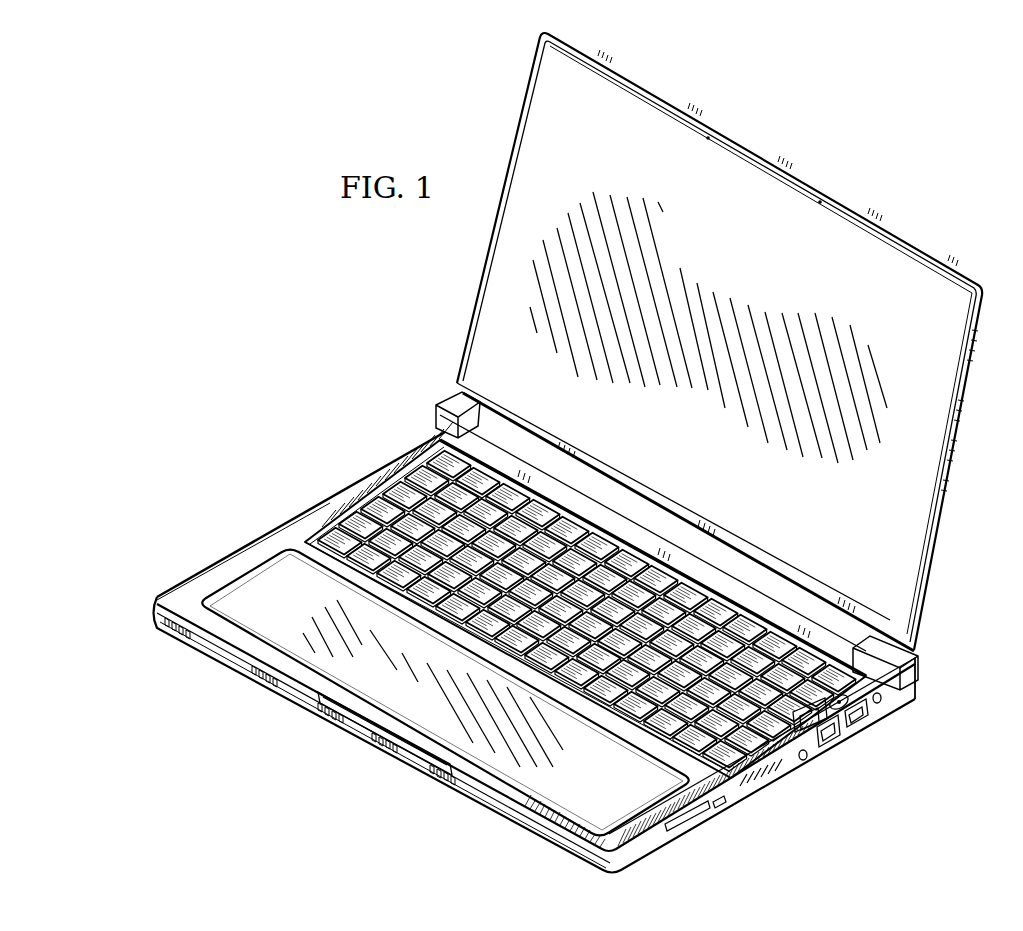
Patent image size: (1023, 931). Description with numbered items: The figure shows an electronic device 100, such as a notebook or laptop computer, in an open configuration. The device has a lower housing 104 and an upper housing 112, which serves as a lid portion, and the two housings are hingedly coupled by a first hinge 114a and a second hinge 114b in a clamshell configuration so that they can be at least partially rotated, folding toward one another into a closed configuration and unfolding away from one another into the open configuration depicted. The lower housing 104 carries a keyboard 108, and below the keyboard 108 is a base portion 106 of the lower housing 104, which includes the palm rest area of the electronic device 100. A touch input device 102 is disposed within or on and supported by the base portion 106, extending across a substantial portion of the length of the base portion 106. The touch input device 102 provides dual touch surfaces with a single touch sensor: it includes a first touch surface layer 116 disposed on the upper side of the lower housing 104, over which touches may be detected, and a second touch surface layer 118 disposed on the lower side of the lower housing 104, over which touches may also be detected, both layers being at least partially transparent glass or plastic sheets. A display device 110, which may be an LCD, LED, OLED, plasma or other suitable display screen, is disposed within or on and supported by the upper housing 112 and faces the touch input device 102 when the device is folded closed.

The electronic device 100 is at (848, 144).
The touch input device 102 is at (262, 555).
The lower housing 104 is at (303, 512).
The base portion 106 is at (188, 588).
The keyboard 108 is at (393, 490).
The display device 110 is at (763, 244).
The upper housing 112 is at (890, 222).
The first hinge 114a is at (470, 418).
The second hinge 114b is at (880, 645).
The first touch surface layer 116 is at (243, 598).
The second touch surface layer 118 is at (218, 655).